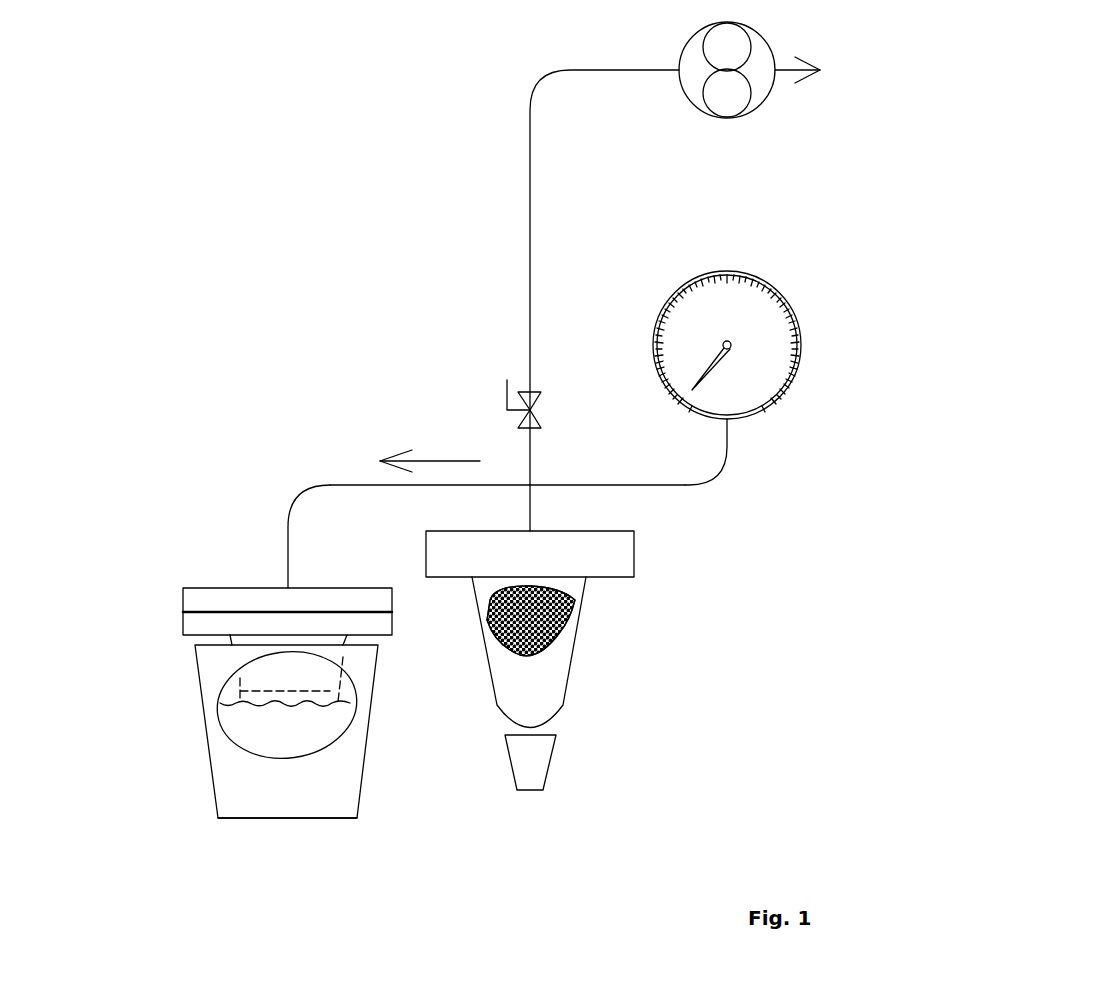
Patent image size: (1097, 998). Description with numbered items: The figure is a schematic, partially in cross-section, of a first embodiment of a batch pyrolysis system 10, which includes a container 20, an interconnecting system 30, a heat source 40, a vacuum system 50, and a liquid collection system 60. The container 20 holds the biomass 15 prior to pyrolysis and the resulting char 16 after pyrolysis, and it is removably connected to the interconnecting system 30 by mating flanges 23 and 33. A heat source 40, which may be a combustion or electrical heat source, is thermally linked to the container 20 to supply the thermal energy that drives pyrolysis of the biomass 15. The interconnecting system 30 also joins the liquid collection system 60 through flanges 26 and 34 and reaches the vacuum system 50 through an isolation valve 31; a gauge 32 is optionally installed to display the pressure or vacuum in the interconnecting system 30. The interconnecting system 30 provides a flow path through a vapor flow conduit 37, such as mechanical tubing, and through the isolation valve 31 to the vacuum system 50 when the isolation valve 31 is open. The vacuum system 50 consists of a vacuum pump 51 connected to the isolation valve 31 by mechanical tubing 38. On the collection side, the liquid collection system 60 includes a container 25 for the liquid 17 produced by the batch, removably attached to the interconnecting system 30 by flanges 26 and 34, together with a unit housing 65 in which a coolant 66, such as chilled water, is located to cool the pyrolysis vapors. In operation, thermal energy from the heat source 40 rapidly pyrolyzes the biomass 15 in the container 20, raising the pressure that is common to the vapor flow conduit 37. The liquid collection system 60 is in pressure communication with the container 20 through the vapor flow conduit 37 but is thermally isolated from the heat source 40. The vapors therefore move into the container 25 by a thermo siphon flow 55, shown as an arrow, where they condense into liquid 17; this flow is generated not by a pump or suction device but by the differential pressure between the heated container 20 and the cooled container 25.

The pyrolysis system 10 is at (387, 290).
The biomass 15 is at (567, 608).
The char 16 is at (565, 625).
The liquid 17 is at (302, 688).
The container 20 is at (567, 685).
The flange 23 is at (640, 553).
The container 25 is at (237, 678).
The flange 26 is at (182, 622).
The interconnecting system 30 is at (551, 472).
The isolation valve 31 is at (542, 407).
The gauge 32 is at (740, 268).
The flange 33 is at (618, 525).
The flange 34 is at (197, 583).
The vapor flow conduit 37 is at (723, 463).
The tubing 38 is at (540, 168).
The heat source 40 is at (553, 772).
The vacuum system 50 is at (512, 48).
The vacuum pump 51 is at (660, 40).
The thermo siphon flow 55 is at (447, 453).
The liquid collection system 60 is at (162, 645).
The unit housing 65 is at (217, 787).
The coolant 66 is at (313, 725).